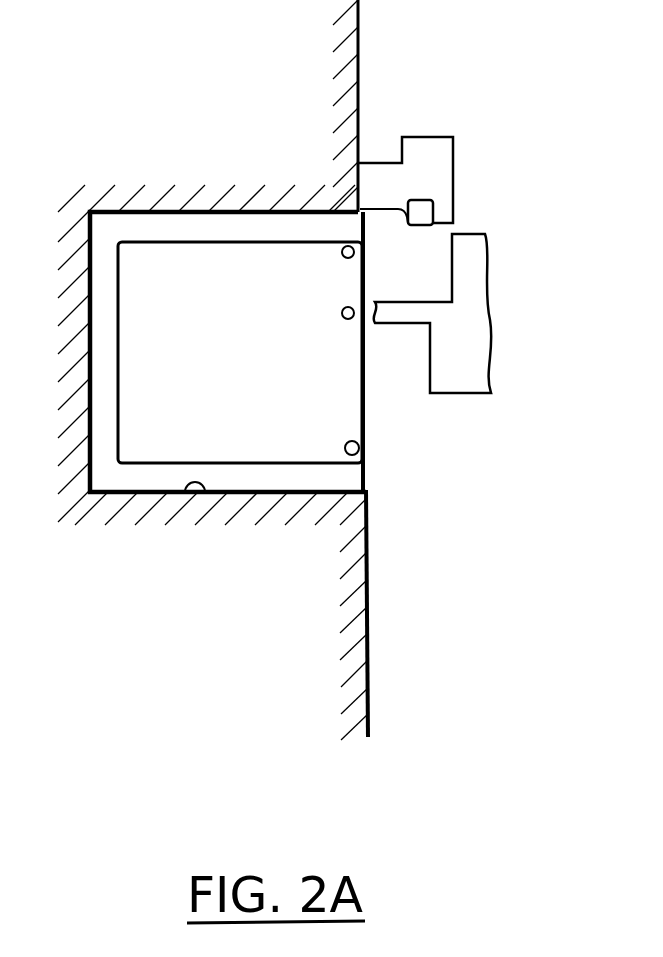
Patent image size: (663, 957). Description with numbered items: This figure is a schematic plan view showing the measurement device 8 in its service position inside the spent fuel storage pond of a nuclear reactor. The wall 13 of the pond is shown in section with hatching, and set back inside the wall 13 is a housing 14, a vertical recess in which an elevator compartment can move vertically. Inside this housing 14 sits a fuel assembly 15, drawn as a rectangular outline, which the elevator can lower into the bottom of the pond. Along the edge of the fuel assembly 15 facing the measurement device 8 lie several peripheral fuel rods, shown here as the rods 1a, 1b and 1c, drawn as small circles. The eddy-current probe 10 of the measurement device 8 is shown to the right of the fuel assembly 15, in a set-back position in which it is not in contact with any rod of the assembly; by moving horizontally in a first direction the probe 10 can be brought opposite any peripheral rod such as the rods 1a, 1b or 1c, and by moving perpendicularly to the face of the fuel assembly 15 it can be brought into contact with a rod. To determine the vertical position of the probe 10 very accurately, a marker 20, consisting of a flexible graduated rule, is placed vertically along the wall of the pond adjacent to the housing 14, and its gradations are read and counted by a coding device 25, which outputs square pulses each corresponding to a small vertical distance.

The measurement device 8 is at (482, 196).
The eddy-current probe 10 is at (398, 311).
The wall 13 is at (218, 197).
The housing 14 is at (180, 495).
The fuel assembly 15 is at (155, 260).
The marker 20 is at (413, 227).
The coding device 25 is at (420, 205).
The rod 1a is at (345, 447).
The rod 1b is at (342, 313).
The rod 1c is at (342, 253).